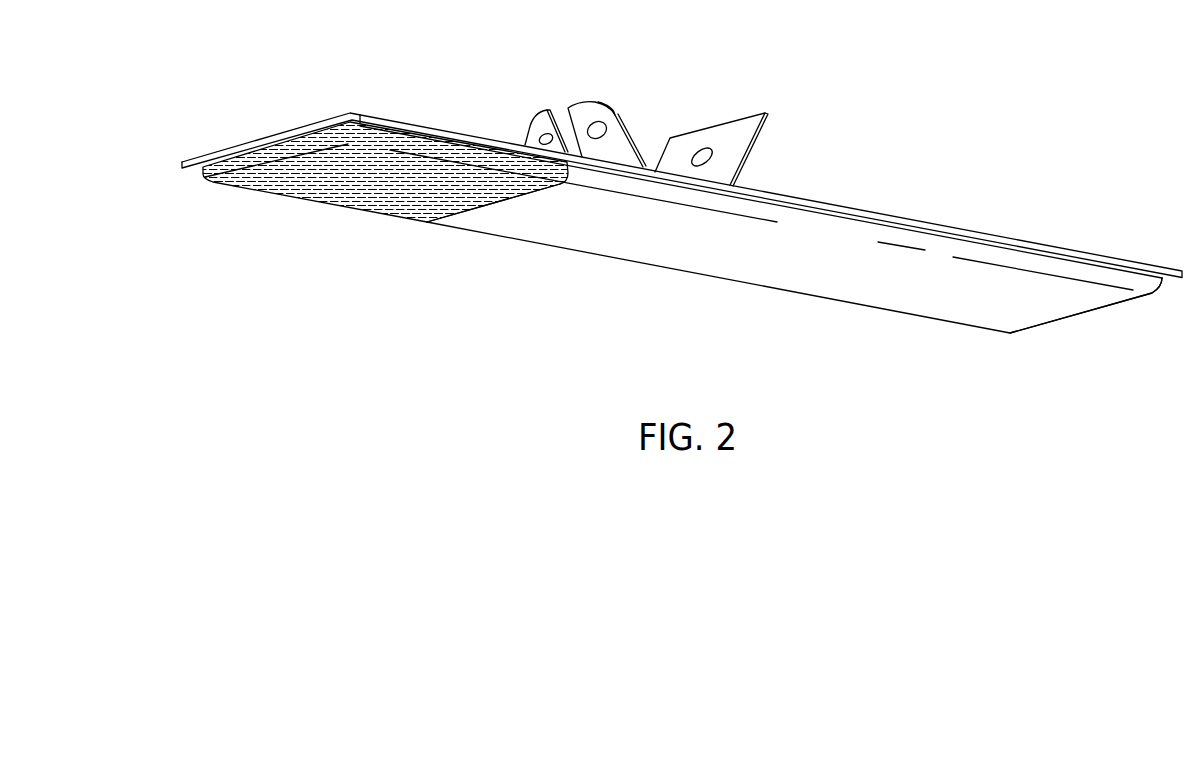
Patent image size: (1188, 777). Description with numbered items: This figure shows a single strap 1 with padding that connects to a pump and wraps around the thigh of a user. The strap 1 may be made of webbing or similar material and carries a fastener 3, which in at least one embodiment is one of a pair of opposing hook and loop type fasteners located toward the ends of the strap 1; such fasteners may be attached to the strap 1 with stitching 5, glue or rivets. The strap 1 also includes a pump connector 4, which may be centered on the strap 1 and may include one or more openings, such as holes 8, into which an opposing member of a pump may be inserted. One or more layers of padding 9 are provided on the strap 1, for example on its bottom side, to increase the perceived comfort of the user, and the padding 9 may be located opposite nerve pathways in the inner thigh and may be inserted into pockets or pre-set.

The strap 1 is at (878, 290).
The fastener 3 is at (357, 190).
The pump connector 4 is at (745, 125).
The stitching 5 is at (494, 229).
The hole 8 is at (544, 140).
The padding 9 is at (1033, 310).